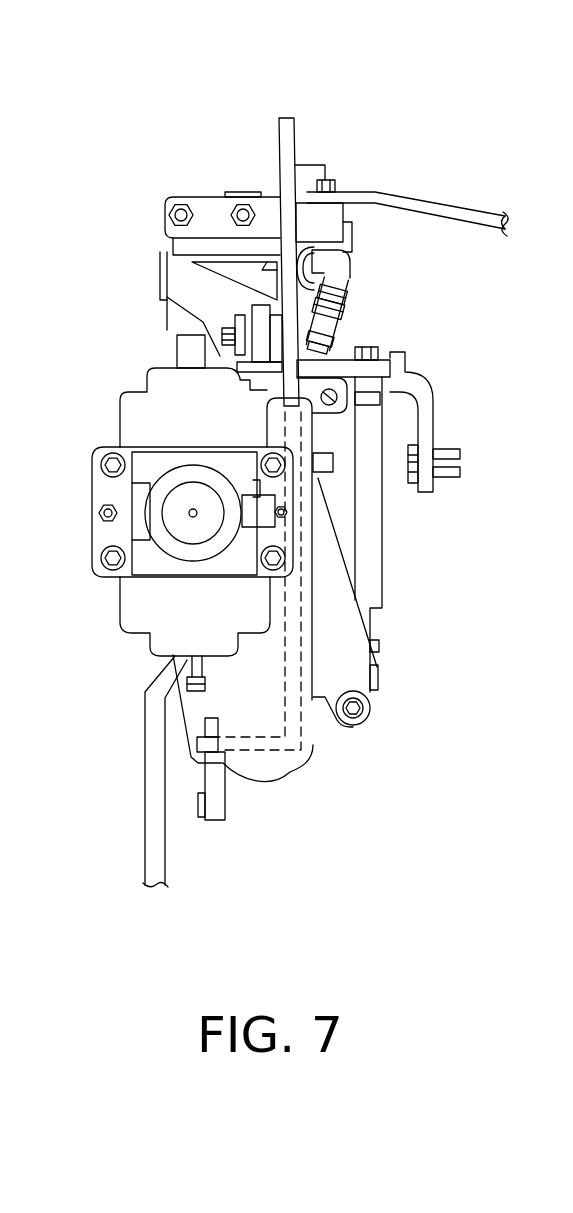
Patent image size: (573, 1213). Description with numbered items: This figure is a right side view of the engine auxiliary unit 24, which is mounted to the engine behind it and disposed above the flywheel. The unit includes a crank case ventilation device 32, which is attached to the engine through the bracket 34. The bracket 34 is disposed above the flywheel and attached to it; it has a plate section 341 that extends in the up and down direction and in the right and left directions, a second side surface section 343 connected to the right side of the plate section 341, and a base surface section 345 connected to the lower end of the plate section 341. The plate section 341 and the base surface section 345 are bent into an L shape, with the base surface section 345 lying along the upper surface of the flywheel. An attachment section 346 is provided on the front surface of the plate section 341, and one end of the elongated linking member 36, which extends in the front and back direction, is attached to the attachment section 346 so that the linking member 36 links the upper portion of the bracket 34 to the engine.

The engine auxiliary unit 24 is at (95, 136).
The crank case ventilation device 32 is at (130, 419).
The bracket 34 is at (270, 173).
The linking member 36 is at (453, 213).
The plate section 341 is at (287, 333).
The second side surface section 343 is at (253, 700).
The base surface section 345 is at (258, 770).
The attachment section 346 is at (323, 215).